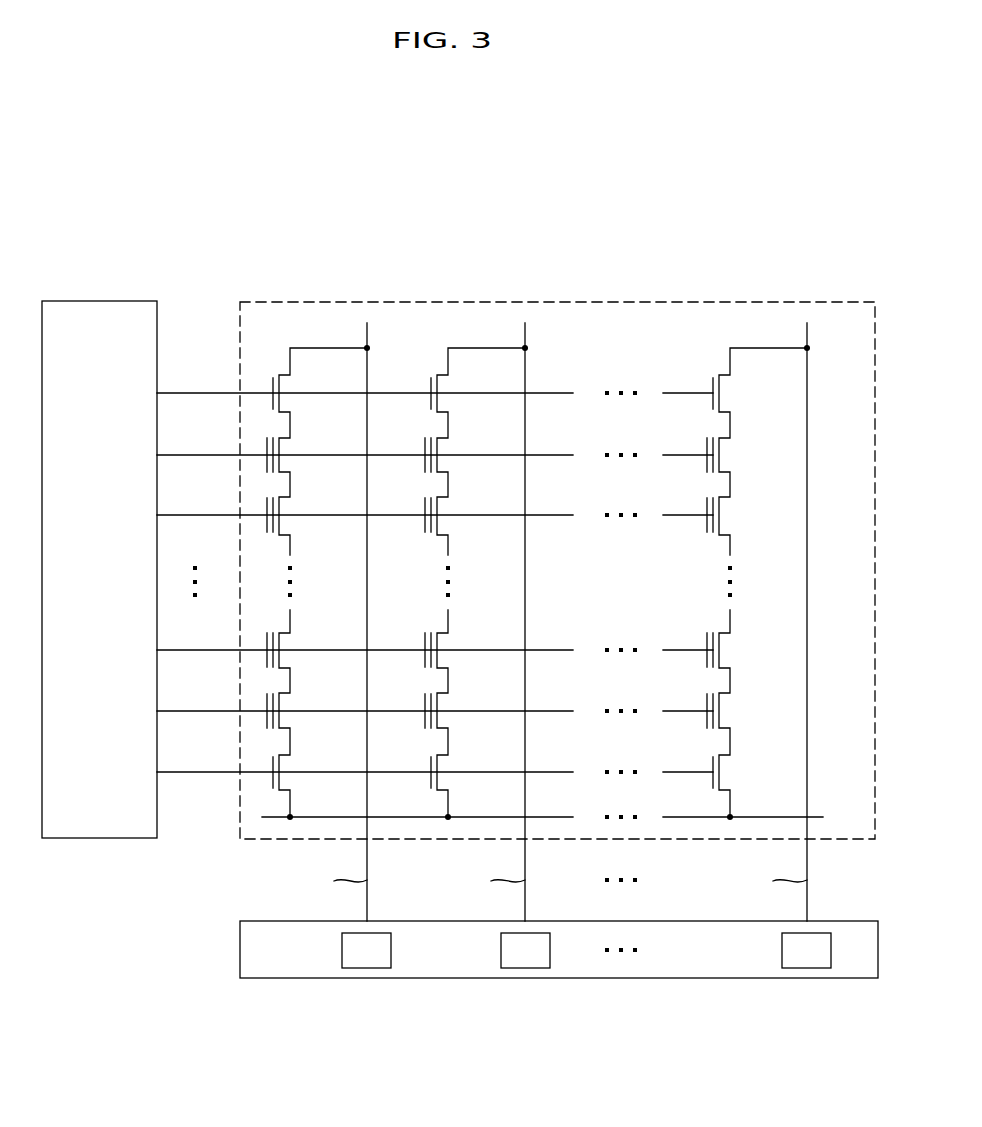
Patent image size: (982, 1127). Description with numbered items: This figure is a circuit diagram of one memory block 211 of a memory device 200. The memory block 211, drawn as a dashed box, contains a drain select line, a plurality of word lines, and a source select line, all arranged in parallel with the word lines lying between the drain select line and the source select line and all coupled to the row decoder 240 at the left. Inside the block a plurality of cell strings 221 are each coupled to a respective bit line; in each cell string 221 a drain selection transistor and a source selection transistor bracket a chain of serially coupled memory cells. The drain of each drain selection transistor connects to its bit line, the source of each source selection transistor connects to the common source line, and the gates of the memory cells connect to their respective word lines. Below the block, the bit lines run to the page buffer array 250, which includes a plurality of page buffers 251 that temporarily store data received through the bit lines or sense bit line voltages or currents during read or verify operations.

The memory device 200 is at (852, 208).
The row decoder 240 is at (100, 301).
The cell string 221 is at (281, 338).
The memory block 211 is at (770, 302).
The page buffer array 250 is at (240, 950).
The page buffer 251 is at (342, 950).